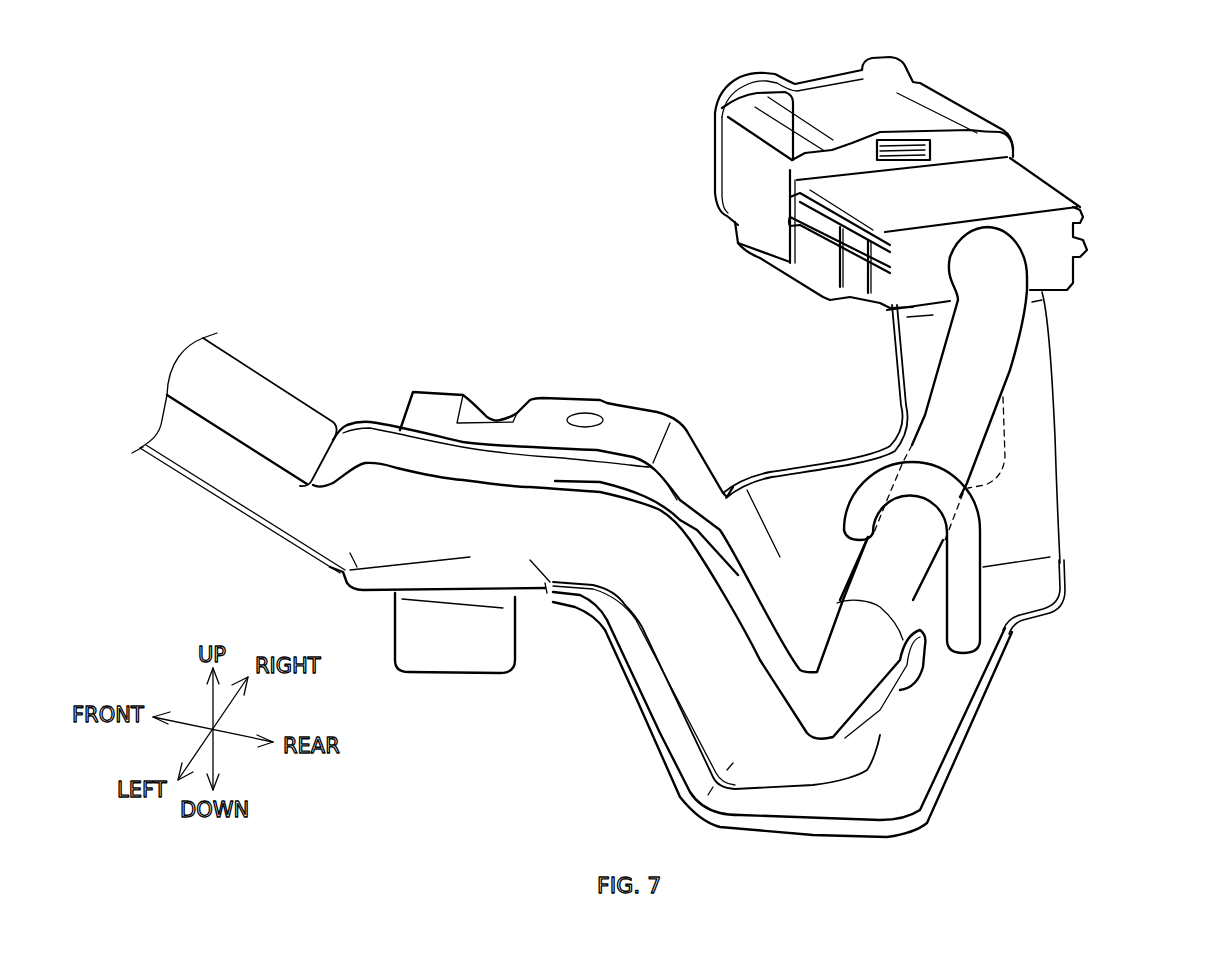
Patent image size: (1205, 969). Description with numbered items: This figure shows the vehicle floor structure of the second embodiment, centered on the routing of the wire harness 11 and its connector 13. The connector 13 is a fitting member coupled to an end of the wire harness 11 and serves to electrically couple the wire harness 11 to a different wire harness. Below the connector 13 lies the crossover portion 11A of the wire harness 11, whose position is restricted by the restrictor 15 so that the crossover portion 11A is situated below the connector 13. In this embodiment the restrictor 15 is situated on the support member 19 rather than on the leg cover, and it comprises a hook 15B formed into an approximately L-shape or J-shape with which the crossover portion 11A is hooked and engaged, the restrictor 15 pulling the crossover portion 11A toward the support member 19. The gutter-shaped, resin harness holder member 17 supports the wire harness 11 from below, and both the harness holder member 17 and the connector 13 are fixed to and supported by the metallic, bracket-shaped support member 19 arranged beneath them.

The wire harness 11 is at (925, 590).
The crossover portion 11A is at (993, 371).
The connector 13 is at (1066, 178).
The restrictor 15 is at (983, 540).
The hook 15B is at (897, 450).
The harness holder member 17 is at (713, 680).
The support member 19 is at (983, 680).